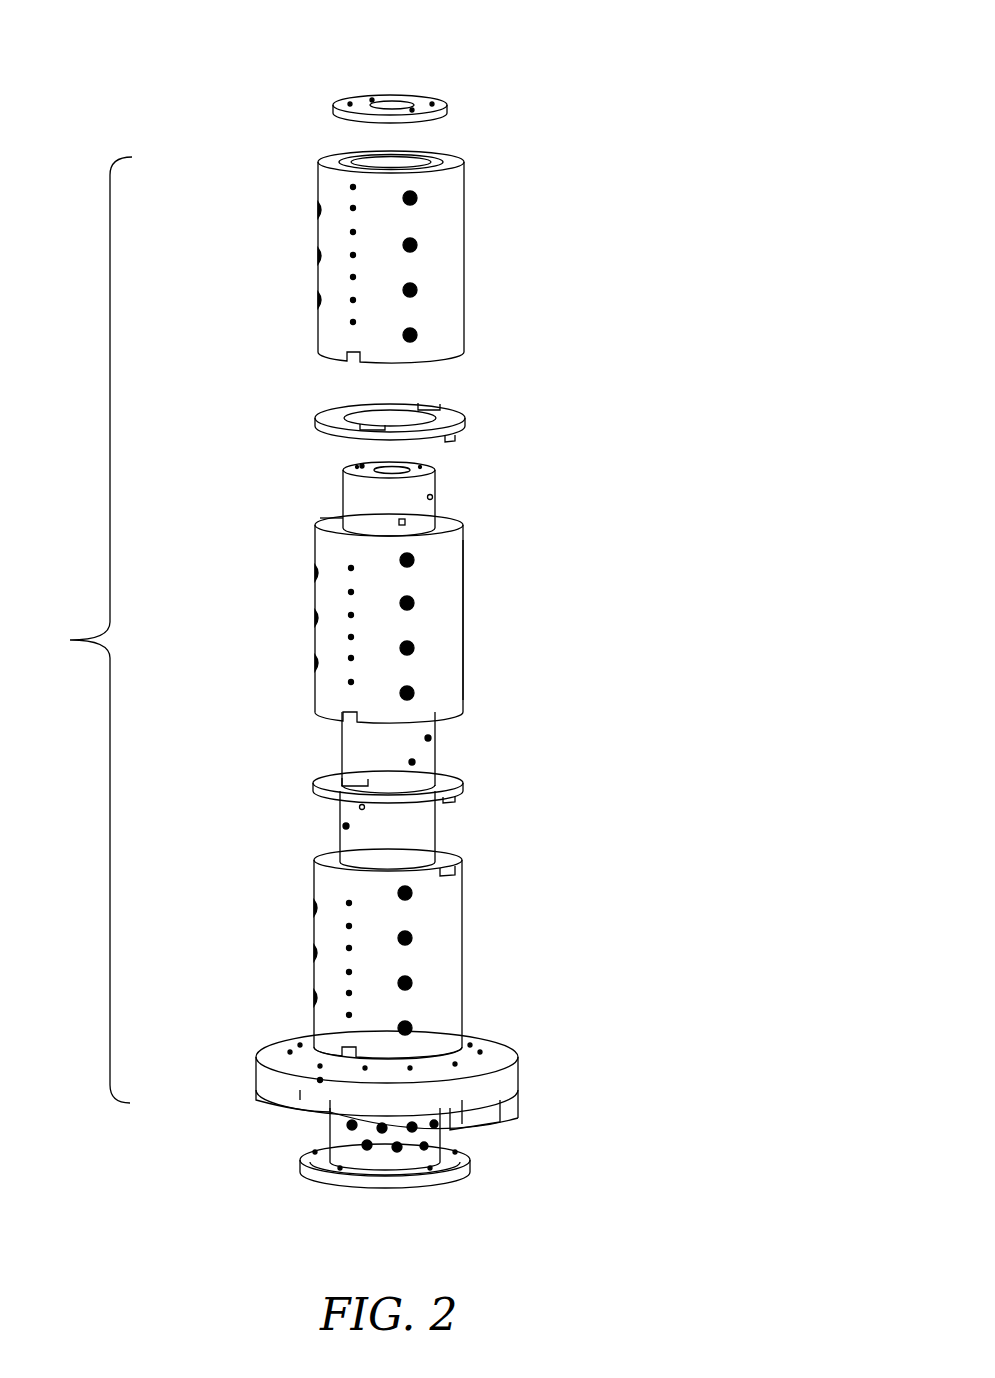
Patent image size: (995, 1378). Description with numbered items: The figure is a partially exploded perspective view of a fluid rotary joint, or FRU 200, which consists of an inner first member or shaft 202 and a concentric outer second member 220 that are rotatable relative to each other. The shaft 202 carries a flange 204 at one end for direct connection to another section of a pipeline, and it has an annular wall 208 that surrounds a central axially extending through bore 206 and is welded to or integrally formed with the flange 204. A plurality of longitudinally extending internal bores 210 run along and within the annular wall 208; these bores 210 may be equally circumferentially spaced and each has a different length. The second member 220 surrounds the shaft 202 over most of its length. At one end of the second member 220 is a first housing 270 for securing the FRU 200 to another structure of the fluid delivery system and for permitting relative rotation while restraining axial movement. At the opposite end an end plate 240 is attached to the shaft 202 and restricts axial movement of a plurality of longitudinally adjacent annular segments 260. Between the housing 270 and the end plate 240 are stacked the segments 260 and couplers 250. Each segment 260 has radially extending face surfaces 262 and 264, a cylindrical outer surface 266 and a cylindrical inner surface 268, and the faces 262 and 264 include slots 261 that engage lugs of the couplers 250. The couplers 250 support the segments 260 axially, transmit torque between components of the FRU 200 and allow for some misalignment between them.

The fluid rotary joint (FRU) 200 is at (734, 60).
The shaft 202 is at (437, 500).
The flange 204 is at (462, 1185).
The central axially extending through bore 206 is at (402, 460).
The annular wall 208 is at (442, 825).
The longitudinally extending internal bores 210 is at (348, 462).
The second member 220 is at (76, 630).
The end plate 240 is at (432, 95).
The couplers 250 is at (444, 410).
The annular segments 260 is at (465, 228).
The slots 261 is at (462, 870).
The radially extending face surface 262 is at (322, 718).
The radially extending face surface 264 is at (322, 512).
The cylindrical outer surface 266 is at (468, 633).
The cylindrical inner surface 268 is at (406, 154).
The first housing 270 is at (565, 1027).